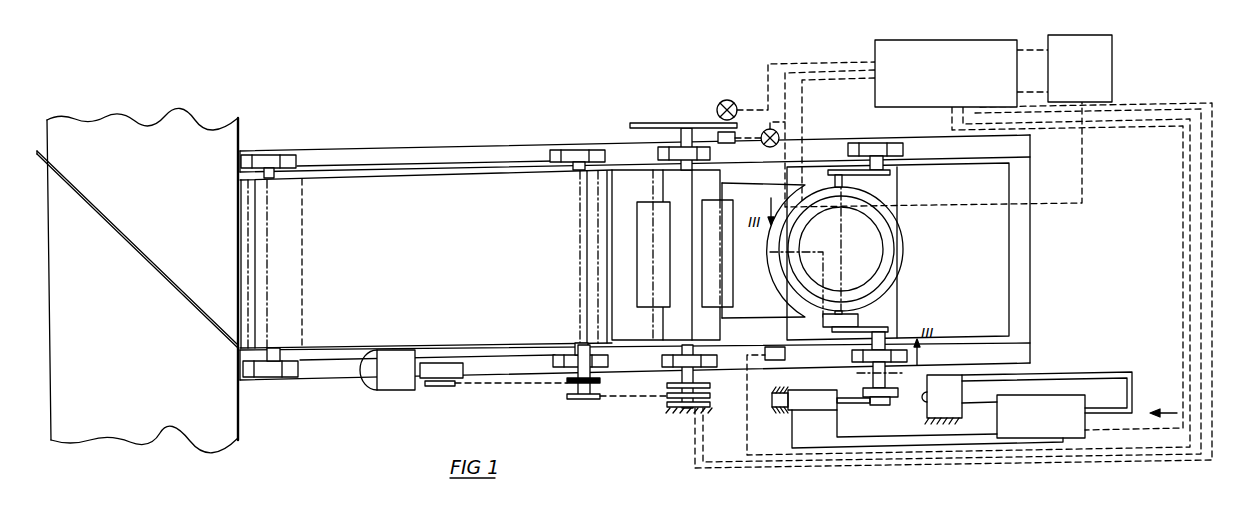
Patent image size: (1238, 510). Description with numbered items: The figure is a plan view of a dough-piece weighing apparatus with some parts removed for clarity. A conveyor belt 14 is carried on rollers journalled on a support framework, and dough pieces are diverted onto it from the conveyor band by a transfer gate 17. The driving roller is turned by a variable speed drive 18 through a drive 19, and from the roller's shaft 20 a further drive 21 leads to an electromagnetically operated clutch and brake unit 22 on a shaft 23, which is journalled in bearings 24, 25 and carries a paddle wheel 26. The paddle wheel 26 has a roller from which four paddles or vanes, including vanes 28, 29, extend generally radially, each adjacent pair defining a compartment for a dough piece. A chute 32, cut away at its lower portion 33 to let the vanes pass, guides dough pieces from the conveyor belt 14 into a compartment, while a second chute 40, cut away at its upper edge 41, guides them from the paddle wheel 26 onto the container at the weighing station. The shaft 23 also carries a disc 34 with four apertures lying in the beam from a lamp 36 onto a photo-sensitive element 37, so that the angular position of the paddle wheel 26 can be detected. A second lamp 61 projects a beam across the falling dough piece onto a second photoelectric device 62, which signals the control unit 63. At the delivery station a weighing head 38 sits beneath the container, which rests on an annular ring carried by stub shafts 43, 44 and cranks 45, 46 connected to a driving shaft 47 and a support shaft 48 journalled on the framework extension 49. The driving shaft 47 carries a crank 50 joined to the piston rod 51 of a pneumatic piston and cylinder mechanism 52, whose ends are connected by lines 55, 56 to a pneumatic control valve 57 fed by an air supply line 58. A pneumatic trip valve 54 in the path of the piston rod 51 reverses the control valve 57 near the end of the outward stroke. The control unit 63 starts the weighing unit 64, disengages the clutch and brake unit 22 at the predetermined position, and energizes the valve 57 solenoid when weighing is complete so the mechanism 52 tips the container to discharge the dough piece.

The conveyor belt 14 is at (396, 172).
The transfer gate 17 is at (158, 272).
The variable speed drive 18 is at (395, 392).
The drive 19 is at (495, 386).
The shaft 20 is at (600, 388).
The drive 21 is at (628, 400).
The electromagnetically operated clutch and brake unit 22 is at (710, 395).
The shaft 23 is at (682, 383).
The bearing 24 is at (713, 358).
The bearing 25 is at (712, 155).
The paddle wheel 26 is at (684, 196).
The paddle or vane 28 is at (727, 211).
The paddle or vane 29 is at (646, 202).
The chute 32 is at (645, 334).
The cut-away lower portion 33 is at (651, 198).
The disc 34 is at (652, 122).
The lamp 36 is at (727, 99).
The photo-sensitive element 37 is at (733, 140).
The weighing head 38 is at (890, 305).
The second chute 40 is at (767, 188).
The cut-away upper edge 41 is at (737, 275).
The stub shaft 43 is at (860, 312).
The stub shaft 44 is at (840, 180).
The crank 45 is at (888, 327).
The crank 46 is at (888, 170).
The driving shaft 47 is at (898, 338).
The support shaft 48 is at (901, 152).
The framework extension 49 is at (1018, 235).
The crank 50 is at (892, 388).
The piston rod 51 is at (860, 403).
The pneumatic piston and cylinder mechanism 52 is at (803, 392).
The pneumatic trip valve 54 is at (950, 372).
The line 55 is at (792, 430).
The line 56 is at (838, 428).
The pneumatic control valve 57 is at (1050, 405).
The air supply line 58 is at (1140, 413).
The second lamp 61 is at (780, 136).
The second photoelectric device 62 is at (785, 352).
The control unit 63 is at (958, 50).
The weighing unit 64 is at (1108, 65).